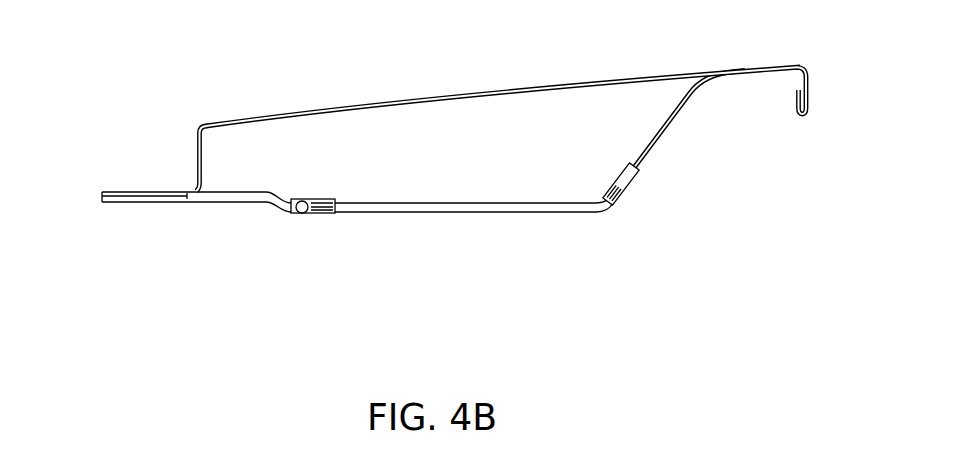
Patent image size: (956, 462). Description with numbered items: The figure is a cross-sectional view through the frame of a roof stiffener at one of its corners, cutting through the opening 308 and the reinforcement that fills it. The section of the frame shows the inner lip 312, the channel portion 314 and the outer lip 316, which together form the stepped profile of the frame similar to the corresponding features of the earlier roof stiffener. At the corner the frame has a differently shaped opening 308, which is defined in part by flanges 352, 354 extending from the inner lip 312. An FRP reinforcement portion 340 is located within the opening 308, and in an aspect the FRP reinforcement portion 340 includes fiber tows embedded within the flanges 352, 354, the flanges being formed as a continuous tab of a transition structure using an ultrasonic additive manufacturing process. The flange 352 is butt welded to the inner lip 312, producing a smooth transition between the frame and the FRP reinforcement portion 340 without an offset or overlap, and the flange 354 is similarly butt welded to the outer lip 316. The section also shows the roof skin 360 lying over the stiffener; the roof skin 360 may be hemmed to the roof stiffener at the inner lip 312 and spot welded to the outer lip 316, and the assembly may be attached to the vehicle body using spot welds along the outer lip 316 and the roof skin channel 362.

The opening 308 is at (465, 293).
The inner lip 312 is at (723, 82).
The channel portion 314 is at (417, 213).
The outer lip 316 is at (170, 202).
The FRP reinforcement portion 340 is at (577, 215).
The flange 352 is at (622, 173).
The flange 354 is at (298, 214).
The roof skin 360 is at (612, 80).
The roof skin channel 362 is at (197, 157).